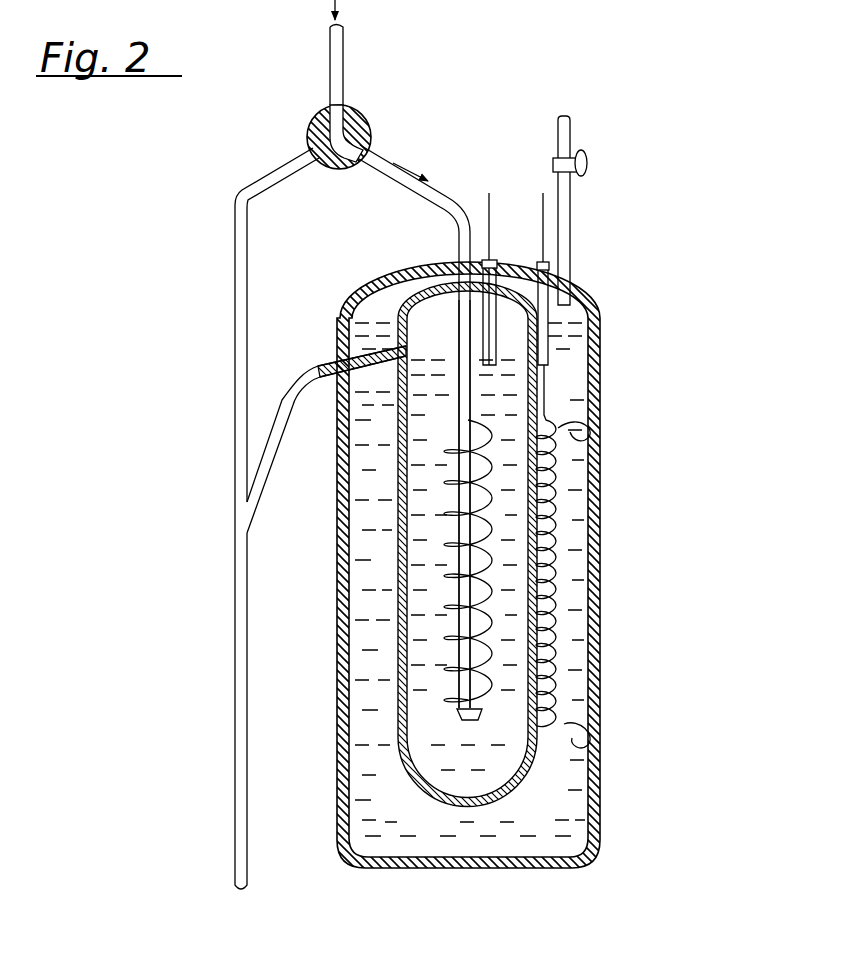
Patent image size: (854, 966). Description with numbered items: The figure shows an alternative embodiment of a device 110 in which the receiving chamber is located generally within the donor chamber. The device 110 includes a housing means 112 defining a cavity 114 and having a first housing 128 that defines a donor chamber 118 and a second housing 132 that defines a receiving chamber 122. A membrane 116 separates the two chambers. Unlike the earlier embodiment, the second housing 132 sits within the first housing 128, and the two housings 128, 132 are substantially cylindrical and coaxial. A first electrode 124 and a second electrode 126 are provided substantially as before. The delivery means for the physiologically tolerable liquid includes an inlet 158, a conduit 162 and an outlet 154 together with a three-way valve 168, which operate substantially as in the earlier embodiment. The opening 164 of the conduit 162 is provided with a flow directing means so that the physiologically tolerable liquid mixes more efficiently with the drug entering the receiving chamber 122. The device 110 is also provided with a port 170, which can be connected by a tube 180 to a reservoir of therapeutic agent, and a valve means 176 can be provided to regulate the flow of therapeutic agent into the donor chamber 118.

The device 110 is at (682, 548).
The housing means 112 is at (602, 652).
The cavity 114 is at (588, 742).
The membrane 116 is at (539, 606).
The donor chamber 118 is at (584, 436).
The receiving chamber 122 is at (426, 683).
The first electrode 124 is at (567, 520).
The second electrode 126 is at (455, 492).
The first housing 128 is at (591, 398).
The second housing 132 is at (397, 643).
The outlet 154 is at (335, 362).
The inlet 158 is at (461, 270).
The conduit 162 is at (466, 386).
The opening 164 is at (481, 713).
The three-way valve 168 is at (356, 120).
The port 170 is at (573, 298).
The valve means 176 is at (588, 158).
The tube 180 is at (571, 205).